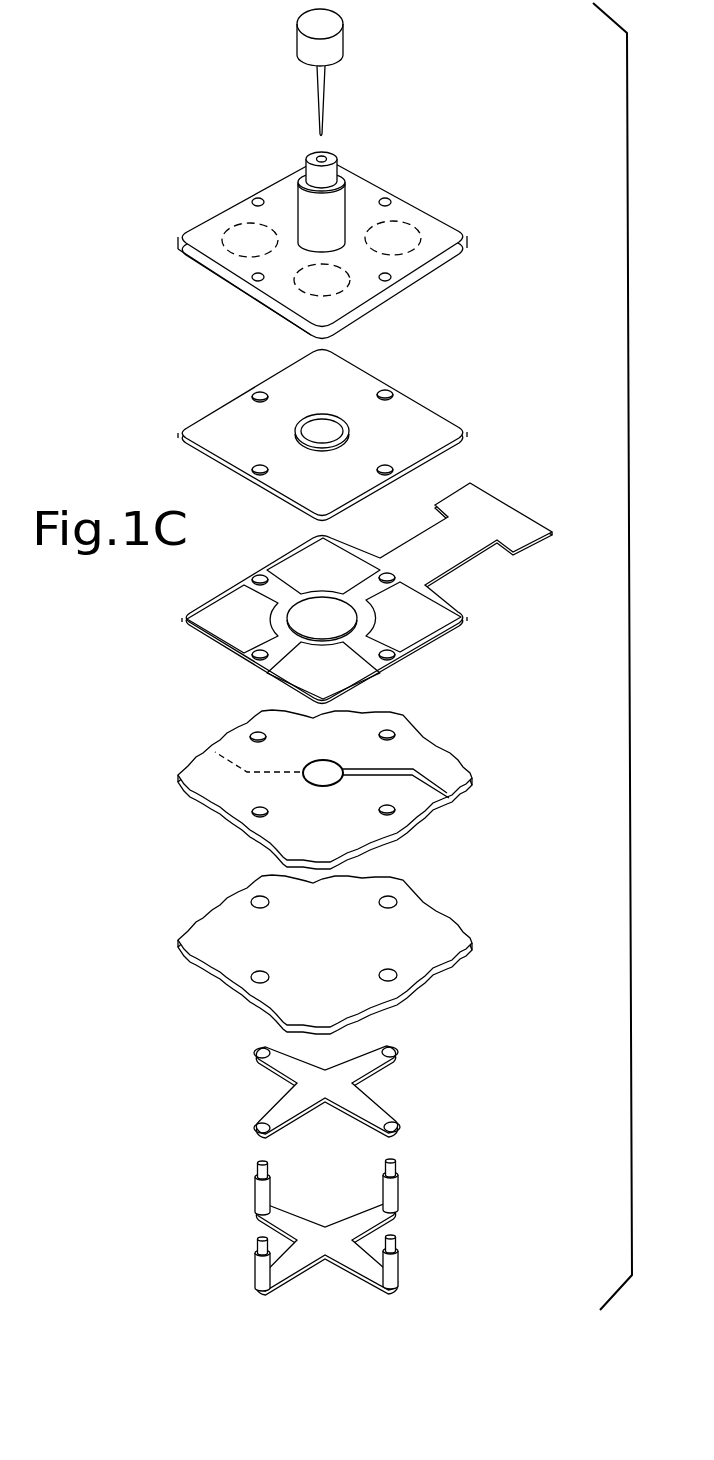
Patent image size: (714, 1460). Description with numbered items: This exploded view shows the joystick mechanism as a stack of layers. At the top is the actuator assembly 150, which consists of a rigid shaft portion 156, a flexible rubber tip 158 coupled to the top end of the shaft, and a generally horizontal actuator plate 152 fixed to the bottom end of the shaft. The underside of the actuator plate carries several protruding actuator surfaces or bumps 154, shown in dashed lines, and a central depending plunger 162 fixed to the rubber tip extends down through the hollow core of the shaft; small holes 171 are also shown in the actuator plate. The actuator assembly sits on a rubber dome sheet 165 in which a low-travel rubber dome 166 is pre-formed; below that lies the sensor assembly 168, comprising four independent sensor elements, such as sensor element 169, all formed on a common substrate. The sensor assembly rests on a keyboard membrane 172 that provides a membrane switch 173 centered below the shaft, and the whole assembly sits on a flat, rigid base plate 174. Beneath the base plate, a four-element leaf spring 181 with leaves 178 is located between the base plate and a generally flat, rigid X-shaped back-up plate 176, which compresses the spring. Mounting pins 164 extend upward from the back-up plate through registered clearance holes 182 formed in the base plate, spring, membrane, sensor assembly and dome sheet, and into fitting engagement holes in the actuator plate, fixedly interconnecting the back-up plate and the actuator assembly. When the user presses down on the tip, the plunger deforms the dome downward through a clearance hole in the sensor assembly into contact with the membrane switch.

The actuator assembly 150 is at (334, 244).
The actuator plate 152 is at (210, 248).
The actuator surfaces or bumps 154 is at (405, 253).
The rigid shaft portion 156 is at (298, 202).
The flexible rubber tip 158 is at (350, 41).
The depending plunger 162 is at (327, 97).
The mounting pins 164 is at (398, 1182).
The rubber dome sheet 165 is at (332, 435).
The rubber dome 166 is at (297, 430).
The sensor assembly 168 is at (392, 593).
The sensor element 169 is at (423, 617).
The hole 171 is at (255, 200).
The keyboard membrane 172 is at (364, 789).
The membrane switch 173 is at (342, 780).
The base plate 174 is at (355, 947).
The back-up plate 176 is at (325, 1219).
The leaves 178 is at (253, 1068).
The four-element leaf spring 181 is at (327, 1091).
The clearance holes 182 is at (257, 897).